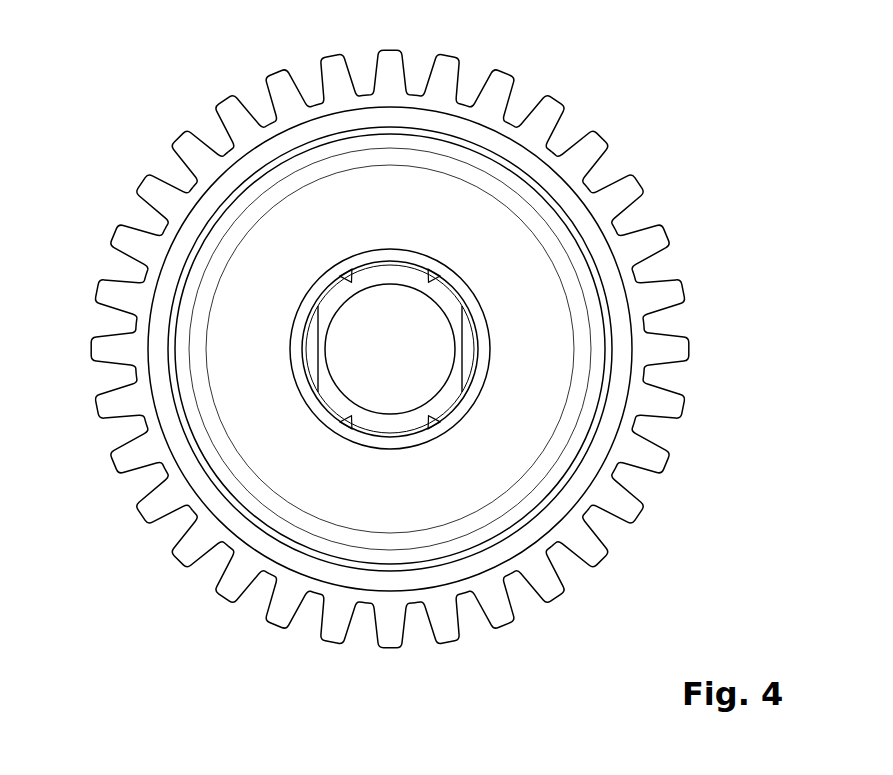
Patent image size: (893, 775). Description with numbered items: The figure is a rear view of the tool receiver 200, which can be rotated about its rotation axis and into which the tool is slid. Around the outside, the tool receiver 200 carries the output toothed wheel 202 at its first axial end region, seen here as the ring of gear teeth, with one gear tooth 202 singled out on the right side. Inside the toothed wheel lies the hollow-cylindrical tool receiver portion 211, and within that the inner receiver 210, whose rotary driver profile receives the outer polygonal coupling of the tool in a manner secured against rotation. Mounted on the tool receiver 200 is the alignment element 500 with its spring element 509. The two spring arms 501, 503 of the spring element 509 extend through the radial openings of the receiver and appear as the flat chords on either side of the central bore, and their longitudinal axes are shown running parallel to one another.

The tool receiver 200 is at (598, 101).
The output toothed wheel 202 is at (664, 419).
The alignment element 500 is at (477, 334).
The spring arm 501 is at (466, 356).
The spring arm 503 is at (312, 355).
The spring element 509 is at (462, 337).
The inner receiver 210 is at (397, 403).
The tool receiver portion 211 is at (328, 405).